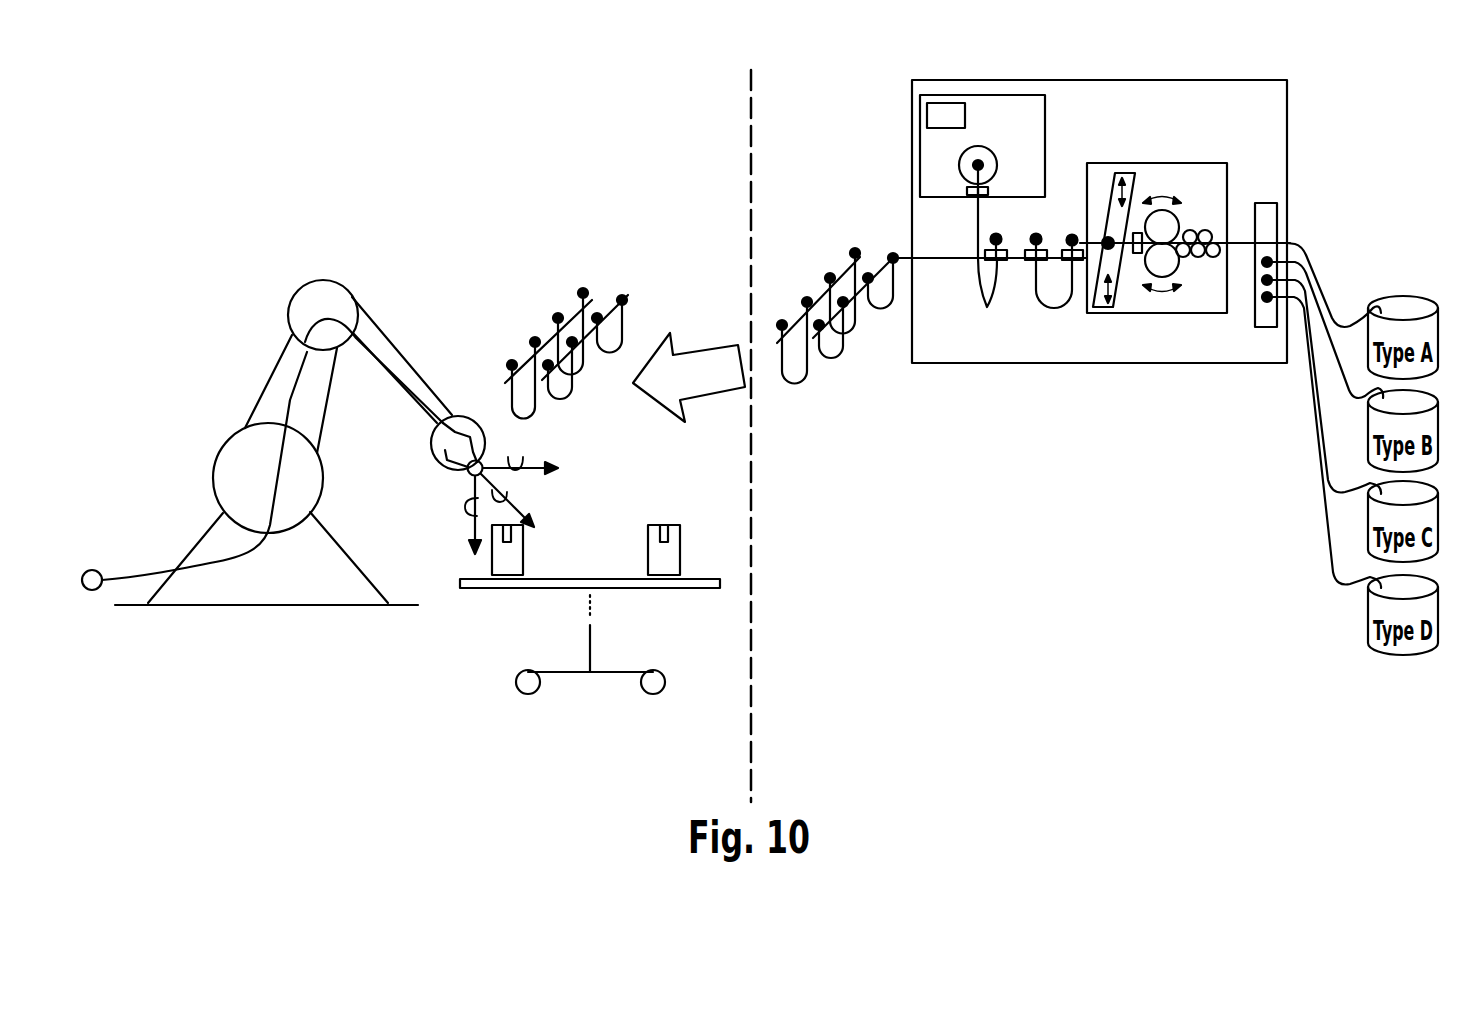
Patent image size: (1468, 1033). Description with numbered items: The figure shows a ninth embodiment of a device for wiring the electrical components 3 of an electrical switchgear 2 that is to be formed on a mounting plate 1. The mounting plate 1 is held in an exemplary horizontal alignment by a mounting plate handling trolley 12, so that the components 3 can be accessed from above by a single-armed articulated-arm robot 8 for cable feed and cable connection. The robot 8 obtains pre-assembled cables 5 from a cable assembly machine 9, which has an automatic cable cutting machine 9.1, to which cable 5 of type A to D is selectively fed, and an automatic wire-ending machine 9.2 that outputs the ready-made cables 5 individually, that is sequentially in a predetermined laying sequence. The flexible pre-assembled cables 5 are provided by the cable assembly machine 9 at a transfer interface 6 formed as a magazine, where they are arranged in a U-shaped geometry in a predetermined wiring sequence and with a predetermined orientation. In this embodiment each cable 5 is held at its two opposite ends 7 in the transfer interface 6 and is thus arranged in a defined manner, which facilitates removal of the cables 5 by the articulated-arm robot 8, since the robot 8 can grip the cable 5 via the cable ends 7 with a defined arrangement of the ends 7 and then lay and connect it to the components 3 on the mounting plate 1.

The mounting plate 1 is at (705, 588).
The electrical switchgear 2 is at (624, 514).
The electrical components 3 is at (508, 555).
The cable 5 is at (292, 382).
The transfer interface 6 is at (530, 357).
The cable ends 7 is at (467, 482).
The articulated-arm robot 8 is at (323, 312).
The cable assembly machine 9 is at (1085, 80).
The automatic cable cutting machine 9.1 is at (1162, 177).
The automatic wire-ending machine 9.2 is at (985, 107).
The mounting plate handling trolley 12 is at (592, 643).